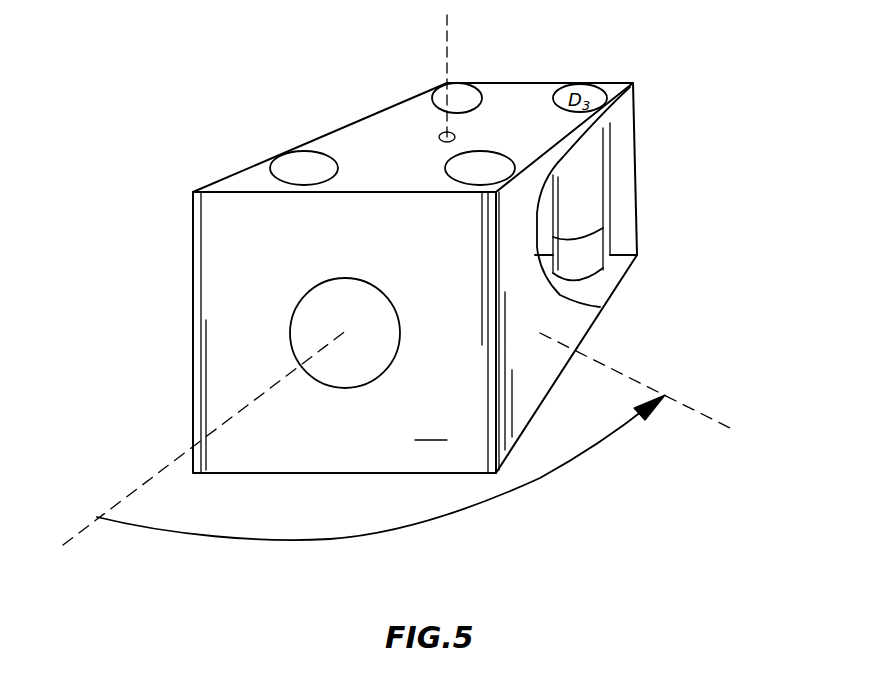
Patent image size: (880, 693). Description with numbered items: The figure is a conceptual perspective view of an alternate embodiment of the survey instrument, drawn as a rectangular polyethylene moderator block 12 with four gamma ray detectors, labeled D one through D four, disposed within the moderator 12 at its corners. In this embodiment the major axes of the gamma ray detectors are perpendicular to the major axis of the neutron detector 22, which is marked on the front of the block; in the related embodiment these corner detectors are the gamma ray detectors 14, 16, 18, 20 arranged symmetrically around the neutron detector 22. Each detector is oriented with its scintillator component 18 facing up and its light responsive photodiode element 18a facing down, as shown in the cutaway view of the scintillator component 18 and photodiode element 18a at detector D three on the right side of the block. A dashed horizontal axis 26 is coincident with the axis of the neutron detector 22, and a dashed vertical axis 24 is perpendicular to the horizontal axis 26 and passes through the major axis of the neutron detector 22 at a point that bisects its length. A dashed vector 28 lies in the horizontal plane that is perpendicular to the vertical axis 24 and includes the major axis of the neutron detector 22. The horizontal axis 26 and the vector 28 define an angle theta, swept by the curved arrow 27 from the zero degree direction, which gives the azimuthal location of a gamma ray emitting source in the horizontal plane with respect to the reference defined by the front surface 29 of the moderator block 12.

The moderator block 12 is at (375, 138).
The gamma ray detector 14 is at (273, 170).
The gamma ray detector 16 is at (445, 168).
The scintillator component 18 is at (600, 82).
The photodiode element 18a is at (590, 260).
The gamma ray detector 20 is at (473, 90).
The neutron detector 22 is at (372, 366).
The vertical axis 24 is at (447, 43).
The horizontal axis 26 is at (157, 472).
The rotation arc 27 is at (570, 463).
The vector 28 is at (698, 408).
The front surface 29 is at (228, 335).